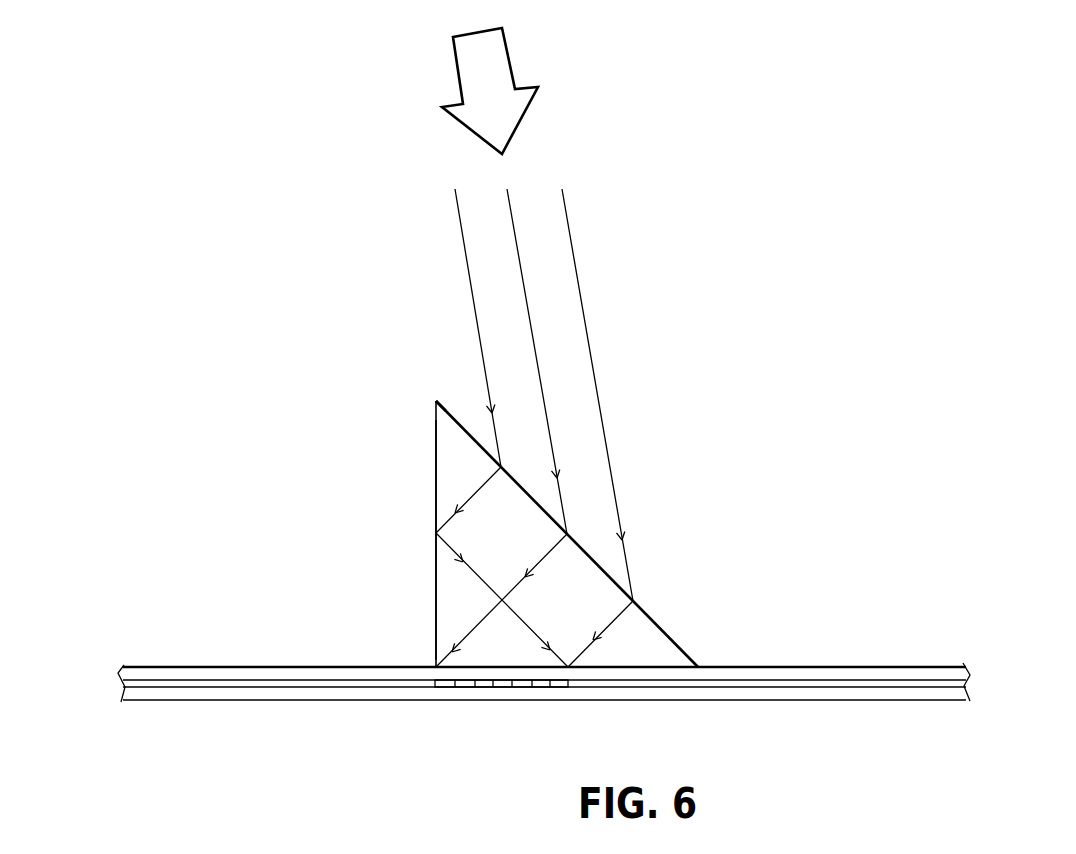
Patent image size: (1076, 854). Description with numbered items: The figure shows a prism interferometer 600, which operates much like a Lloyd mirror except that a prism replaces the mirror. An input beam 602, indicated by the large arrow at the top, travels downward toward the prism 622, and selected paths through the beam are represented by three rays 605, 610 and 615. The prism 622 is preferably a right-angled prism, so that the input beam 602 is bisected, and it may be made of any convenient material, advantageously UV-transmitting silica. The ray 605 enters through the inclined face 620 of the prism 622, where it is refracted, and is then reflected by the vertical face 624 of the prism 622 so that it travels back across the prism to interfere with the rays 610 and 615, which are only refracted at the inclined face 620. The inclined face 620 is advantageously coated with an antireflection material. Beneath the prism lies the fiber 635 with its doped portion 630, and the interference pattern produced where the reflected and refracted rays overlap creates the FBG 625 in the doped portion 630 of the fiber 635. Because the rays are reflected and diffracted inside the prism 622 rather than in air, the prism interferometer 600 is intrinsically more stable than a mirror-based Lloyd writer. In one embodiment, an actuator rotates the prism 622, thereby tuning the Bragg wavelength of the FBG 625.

The prism interferometer 600 is at (855, 68).
The input beam 602 is at (508, 53).
The ray 605 is at (459, 217).
The ray 610 is at (510, 200).
The ray 615 is at (579, 287).
The inclined face 620 is at (539, 512).
The prism 622 is at (435, 408).
The vertical face 624 is at (435, 506).
The FBG 625 is at (498, 684).
The doped portion 630 is at (595, 668).
The fiber 635 is at (880, 660).